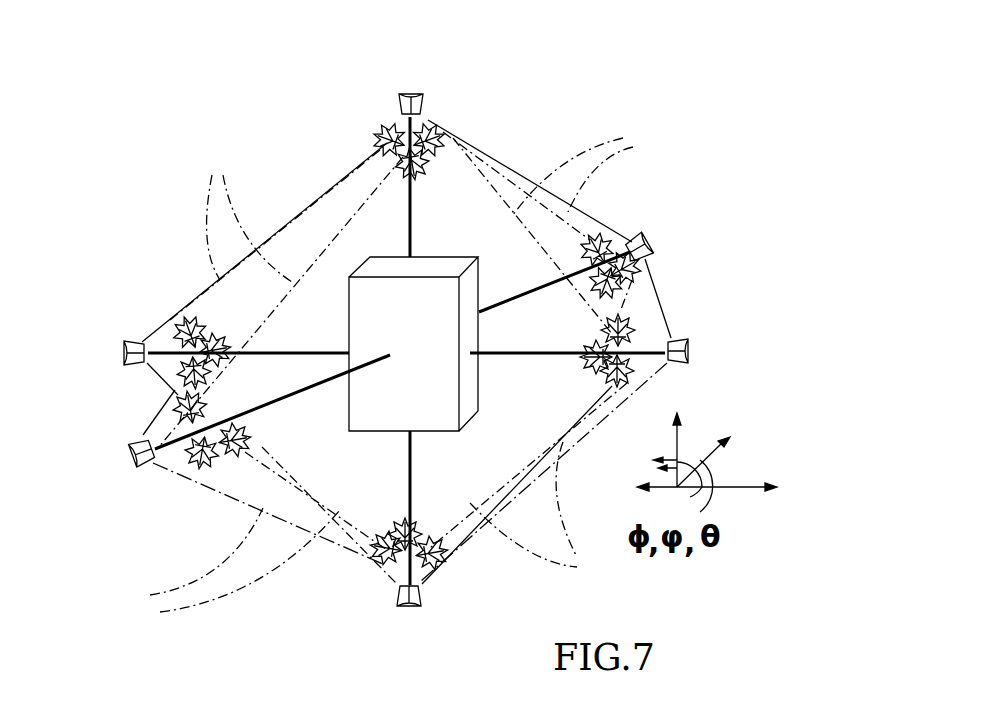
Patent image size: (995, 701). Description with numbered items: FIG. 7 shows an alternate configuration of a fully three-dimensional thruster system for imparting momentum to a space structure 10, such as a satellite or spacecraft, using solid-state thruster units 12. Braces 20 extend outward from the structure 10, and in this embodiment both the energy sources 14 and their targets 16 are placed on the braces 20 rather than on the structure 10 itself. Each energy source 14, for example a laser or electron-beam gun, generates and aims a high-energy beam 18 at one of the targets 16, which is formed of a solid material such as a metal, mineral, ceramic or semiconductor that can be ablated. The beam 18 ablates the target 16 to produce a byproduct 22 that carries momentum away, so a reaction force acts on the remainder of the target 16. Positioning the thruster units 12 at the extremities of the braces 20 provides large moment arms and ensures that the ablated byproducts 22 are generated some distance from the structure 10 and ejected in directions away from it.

The space structure 10 is at (438, 383).
The solid-state thruster unit 12 is at (296, 162).
The energy source 14 is at (422, 98).
The target 16 is at (402, 140).
The high-energy beam 18 is at (392, 372).
The brace 20 is at (412, 192).
The byproduct 22 is at (185, 335).